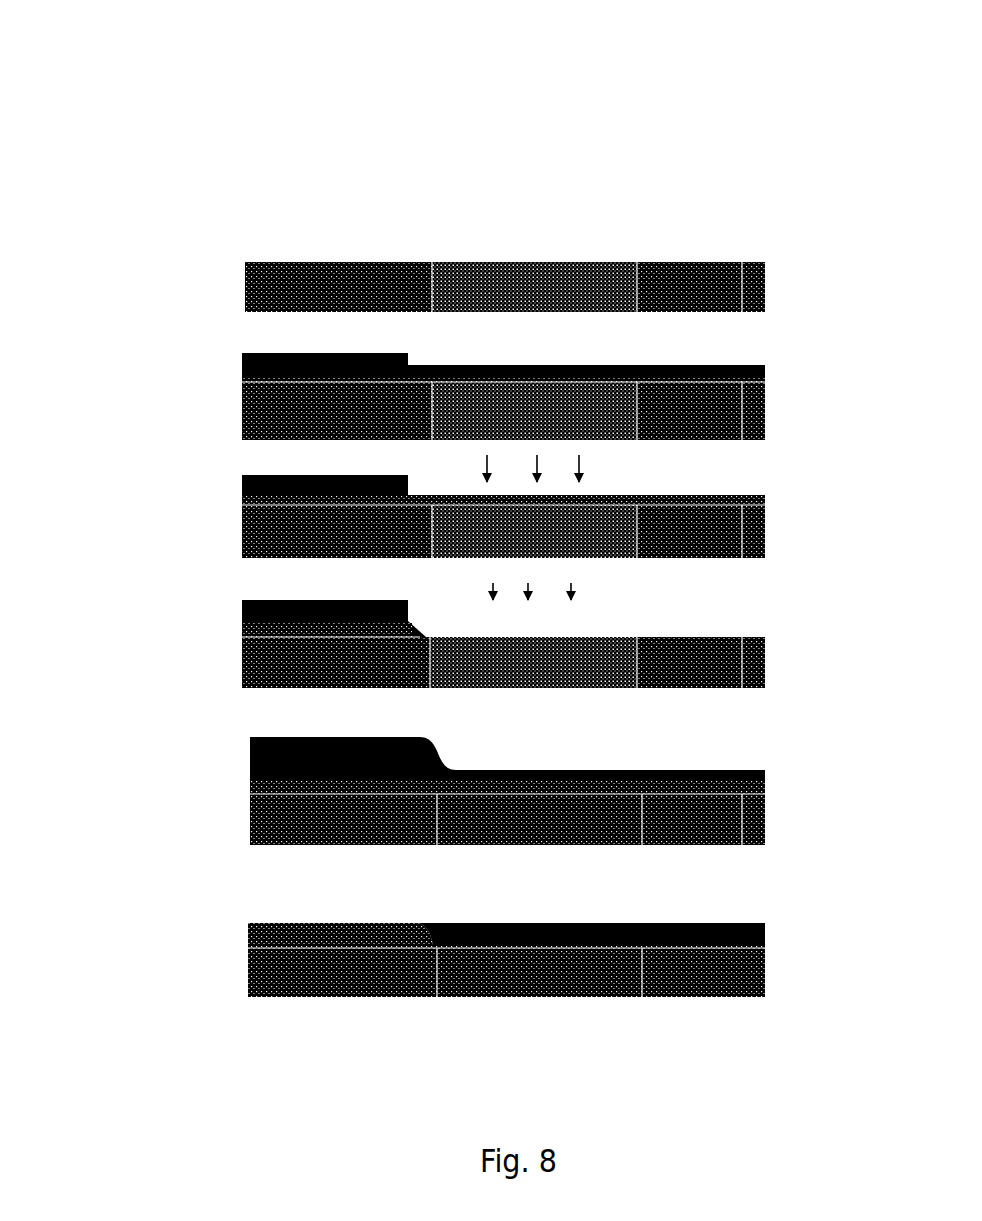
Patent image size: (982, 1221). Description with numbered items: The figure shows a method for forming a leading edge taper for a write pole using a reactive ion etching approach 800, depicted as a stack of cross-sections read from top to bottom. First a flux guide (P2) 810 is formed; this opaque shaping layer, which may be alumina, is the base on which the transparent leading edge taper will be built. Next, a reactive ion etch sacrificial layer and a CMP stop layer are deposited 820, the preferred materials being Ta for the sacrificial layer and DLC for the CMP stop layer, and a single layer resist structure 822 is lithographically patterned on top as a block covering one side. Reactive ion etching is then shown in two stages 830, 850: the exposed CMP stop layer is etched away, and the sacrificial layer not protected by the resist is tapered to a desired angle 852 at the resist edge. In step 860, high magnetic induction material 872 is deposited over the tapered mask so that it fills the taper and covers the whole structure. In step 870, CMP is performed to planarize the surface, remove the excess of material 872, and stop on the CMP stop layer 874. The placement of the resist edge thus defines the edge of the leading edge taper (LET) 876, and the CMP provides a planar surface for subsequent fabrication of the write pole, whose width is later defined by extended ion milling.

The reactive ion etching approach 800 is at (737, 150).
The flux guide (P2) 810 is at (483, 273).
The deposition of reactive ion etch sacrificial layer and CMP stop layer 820 is at (242, 390).
The single layer resist structure 822 is at (272, 349).
The reactive ion etching step 830 is at (717, 472).
The reactive ion etching step 850 is at (688, 603).
The desired angle 852 is at (415, 627).
The deposition step 860 is at (710, 750).
The high magnetic induction material 872 is at (250, 762).
The CMP step 870 is at (703, 908).
The CMP stop layer 874 is at (305, 925).
The leading edge taper (LET) 876 is at (507, 923).